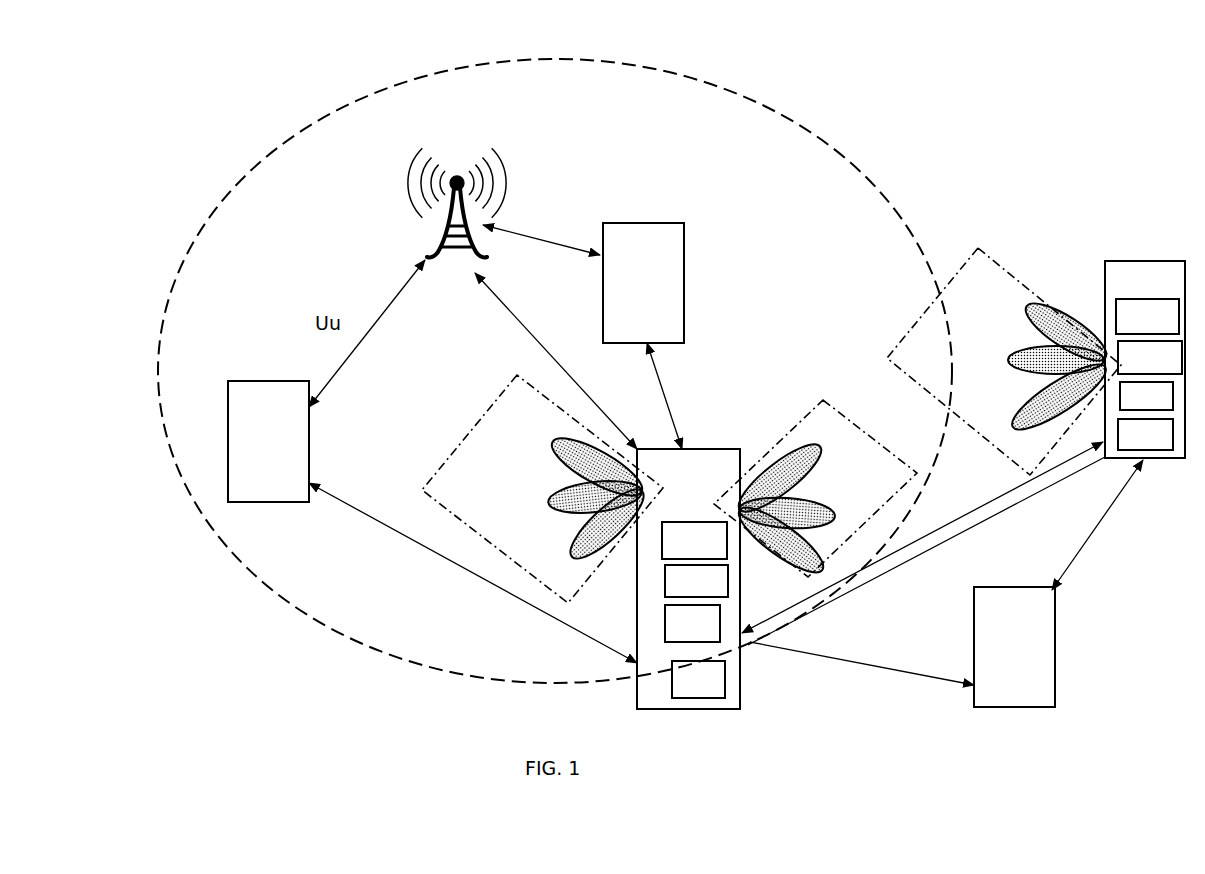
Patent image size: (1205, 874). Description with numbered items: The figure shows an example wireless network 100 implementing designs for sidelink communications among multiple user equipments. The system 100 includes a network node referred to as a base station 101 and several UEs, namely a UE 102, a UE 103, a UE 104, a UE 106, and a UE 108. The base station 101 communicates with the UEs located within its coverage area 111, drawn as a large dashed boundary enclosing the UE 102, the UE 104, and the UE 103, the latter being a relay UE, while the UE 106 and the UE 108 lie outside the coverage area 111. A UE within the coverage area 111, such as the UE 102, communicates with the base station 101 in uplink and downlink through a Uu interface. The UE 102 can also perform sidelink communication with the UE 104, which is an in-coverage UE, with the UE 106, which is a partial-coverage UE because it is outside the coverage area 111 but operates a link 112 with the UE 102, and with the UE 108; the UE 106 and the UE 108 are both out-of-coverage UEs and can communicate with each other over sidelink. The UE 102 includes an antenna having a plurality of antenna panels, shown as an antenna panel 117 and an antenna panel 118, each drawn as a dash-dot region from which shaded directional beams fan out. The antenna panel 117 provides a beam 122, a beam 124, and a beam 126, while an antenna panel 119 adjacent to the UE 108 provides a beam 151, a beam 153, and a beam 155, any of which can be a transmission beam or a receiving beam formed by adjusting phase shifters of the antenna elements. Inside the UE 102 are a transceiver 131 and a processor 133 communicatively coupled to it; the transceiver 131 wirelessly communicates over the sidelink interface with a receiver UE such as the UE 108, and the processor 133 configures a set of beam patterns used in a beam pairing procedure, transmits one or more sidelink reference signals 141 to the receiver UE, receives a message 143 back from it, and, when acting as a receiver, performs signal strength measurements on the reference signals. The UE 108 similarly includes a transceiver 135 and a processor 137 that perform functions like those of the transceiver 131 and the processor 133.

The wireless network 100 is at (160, 82).
The base station 101 is at (413, 202).
The UE 102 is at (688, 579).
The UE 103 is at (643, 283).
The UE 104 is at (268, 441).
The UE 106 is at (1014, 647).
The UE 108 is at (1145, 359).
The coverage area 111 is at (178, 277).
The link 112 is at (862, 688).
The antenna panel 117 is at (815, 452).
The antenna panel 118 is at (480, 420).
The antenna panel 119 is at (1004, 313).
The beam 122 is at (775, 478).
The beam 124 is at (816, 511).
The beam 126 is at (812, 568).
The transceiver 131 is at (694, 540).
The processor 133 is at (696, 581).
The transceiver 135 is at (1147, 316).
The processor 137 is at (1150, 357).
The sidelink reference signals 141 is at (947, 518).
The message 143 is at (985, 522).
The beam 151 is at (1053, 322).
The beam 153 is at (1013, 362).
The beam 155 is at (1040, 418).